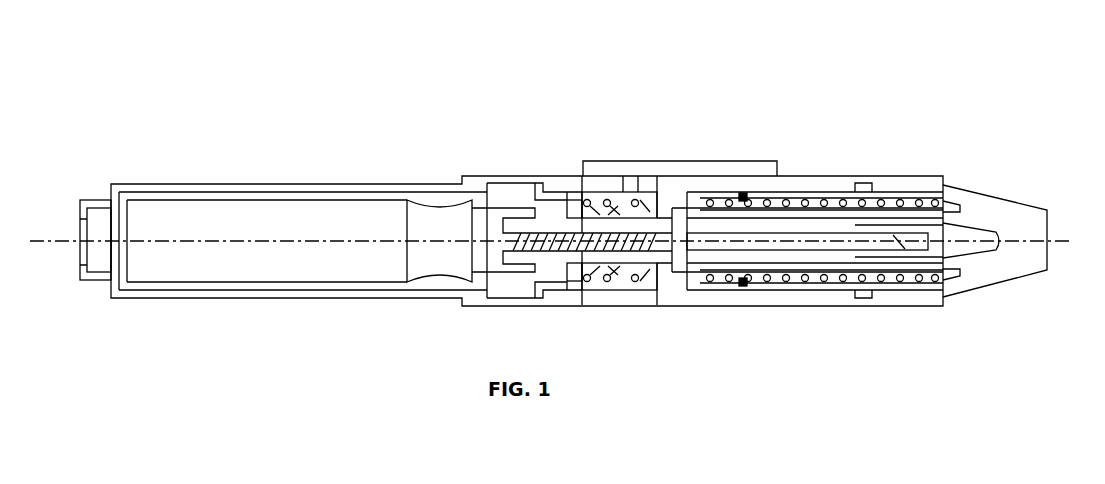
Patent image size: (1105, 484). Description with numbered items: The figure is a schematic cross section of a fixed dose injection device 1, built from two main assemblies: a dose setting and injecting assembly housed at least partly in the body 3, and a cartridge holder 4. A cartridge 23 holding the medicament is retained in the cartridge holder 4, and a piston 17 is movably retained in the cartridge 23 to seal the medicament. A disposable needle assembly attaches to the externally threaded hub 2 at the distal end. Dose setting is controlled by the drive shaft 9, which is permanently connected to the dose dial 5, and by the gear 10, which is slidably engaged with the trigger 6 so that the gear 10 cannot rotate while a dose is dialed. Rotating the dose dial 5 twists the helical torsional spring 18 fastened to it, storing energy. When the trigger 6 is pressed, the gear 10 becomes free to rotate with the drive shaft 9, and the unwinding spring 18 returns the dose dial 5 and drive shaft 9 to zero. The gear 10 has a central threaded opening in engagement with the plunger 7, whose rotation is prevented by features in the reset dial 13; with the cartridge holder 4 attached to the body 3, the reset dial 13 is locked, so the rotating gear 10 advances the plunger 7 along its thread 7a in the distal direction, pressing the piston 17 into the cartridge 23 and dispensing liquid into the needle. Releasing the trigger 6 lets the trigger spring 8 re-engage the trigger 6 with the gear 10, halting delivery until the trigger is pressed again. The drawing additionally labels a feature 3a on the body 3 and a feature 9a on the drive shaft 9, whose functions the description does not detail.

The fixed dose injection device 1 is at (808, 47).
The hub 2 is at (93, 200).
The body 3 is at (745, 290).
The stop of needle holder 3a is at (745, 286).
The cartridge holder 4 is at (232, 184).
The dose dial 5 is at (978, 292).
The trigger 6 is at (647, 273).
The plunger 7 is at (550, 250).
The thread 7a is at (560, 233).
The trigger spring 8 is at (627, 262).
The drive shaft 9 is at (757, 205).
The spring stop 9a is at (742, 193).
The gear 10 is at (603, 215).
The reset dial 13 is at (497, 183).
The piston 17 is at (420, 218).
The helical torsional spring 18 is at (891, 192).
The cartridge 23 is at (250, 282).